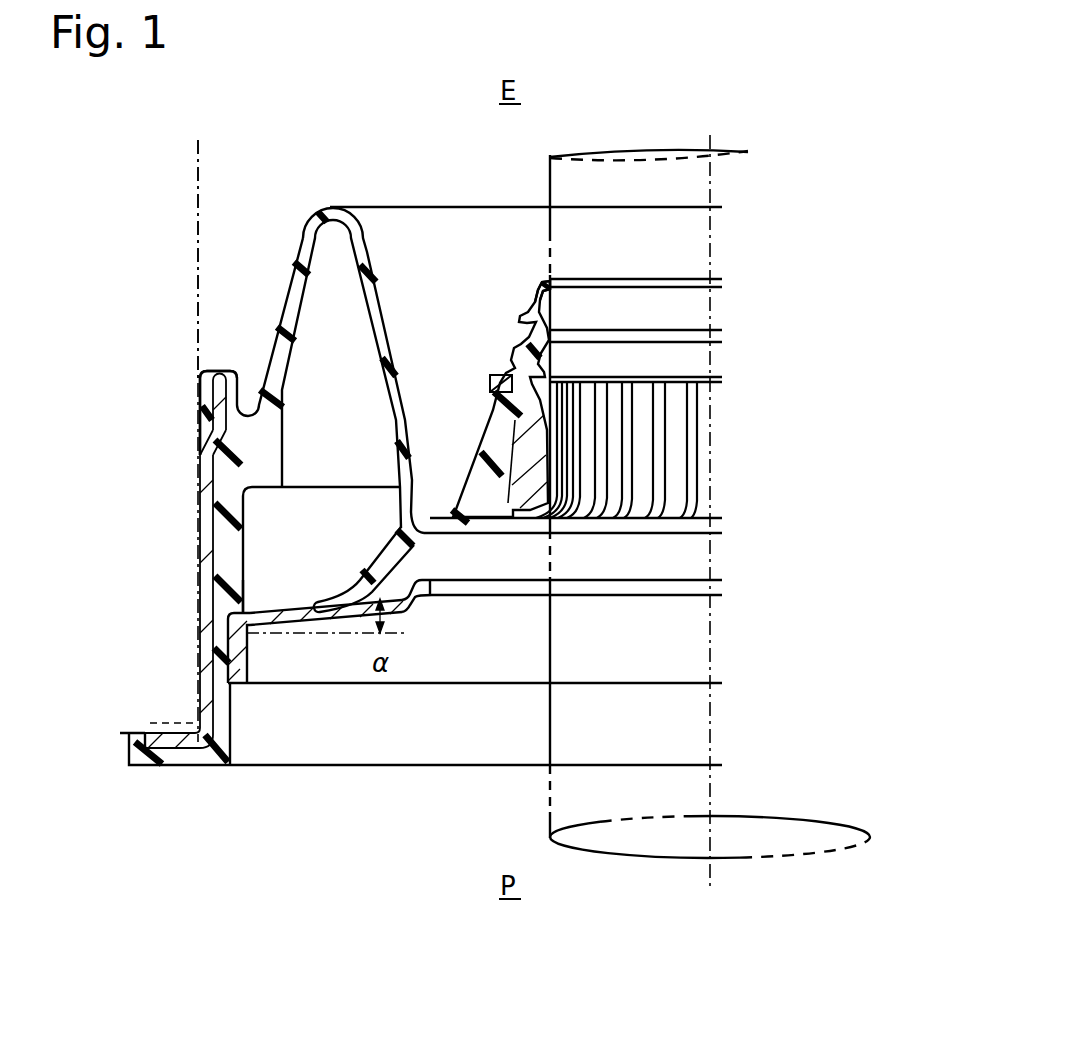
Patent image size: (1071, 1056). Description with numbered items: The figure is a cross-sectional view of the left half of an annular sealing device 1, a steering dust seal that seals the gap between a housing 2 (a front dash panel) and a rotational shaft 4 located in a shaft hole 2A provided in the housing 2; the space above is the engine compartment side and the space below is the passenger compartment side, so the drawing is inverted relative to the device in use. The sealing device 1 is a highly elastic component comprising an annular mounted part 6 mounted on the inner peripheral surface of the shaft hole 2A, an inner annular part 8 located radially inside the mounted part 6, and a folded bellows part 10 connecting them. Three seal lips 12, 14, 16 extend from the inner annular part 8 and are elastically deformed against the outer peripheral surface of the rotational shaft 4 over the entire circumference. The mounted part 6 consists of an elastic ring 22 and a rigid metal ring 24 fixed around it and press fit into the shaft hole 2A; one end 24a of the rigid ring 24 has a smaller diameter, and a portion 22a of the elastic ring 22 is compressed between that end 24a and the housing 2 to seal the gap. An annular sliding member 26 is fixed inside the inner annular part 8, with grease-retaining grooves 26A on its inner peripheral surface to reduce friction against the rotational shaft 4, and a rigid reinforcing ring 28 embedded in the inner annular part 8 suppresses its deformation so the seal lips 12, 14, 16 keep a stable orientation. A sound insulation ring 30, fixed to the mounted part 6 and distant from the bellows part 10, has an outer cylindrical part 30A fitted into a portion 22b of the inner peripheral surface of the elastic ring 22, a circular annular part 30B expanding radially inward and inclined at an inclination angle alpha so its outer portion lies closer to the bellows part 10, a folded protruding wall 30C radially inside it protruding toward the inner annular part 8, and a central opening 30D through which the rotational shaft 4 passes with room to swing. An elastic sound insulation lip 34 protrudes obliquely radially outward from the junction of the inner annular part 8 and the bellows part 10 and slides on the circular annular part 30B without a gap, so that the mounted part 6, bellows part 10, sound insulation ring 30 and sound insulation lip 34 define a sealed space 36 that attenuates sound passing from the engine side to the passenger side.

The sealing device 1 is at (445, 196).
The housing 2 is at (186, 188).
The shaft hole 2A is at (200, 247).
The rotational shaft 4 is at (547, 183).
The mounted part 6 is at (200, 465).
The inner annular part 8 is at (493, 408).
The bellows part 10 is at (287, 272).
The seal lip 12 is at (541, 286).
The seal lip 14 is at (552, 330).
The seal lip 16 is at (552, 343).
The elastic ring 22 is at (270, 460).
The portion of elastic ring 22a is at (200, 367).
The portion of inner peripheral surface of elastic ring 22b is at (245, 613).
The rigid ring 24 is at (200, 598).
The end of rigid ring 24a is at (213, 398).
The sliding member 26 is at (518, 523).
The grooves 26A is at (577, 519).
The reinforcing ring 28 is at (497, 375).
The sound insulation ring 30 is at (243, 684).
The outer cylindrical part 30A is at (243, 650).
The circular annular part 30B is at (335, 618).
The protruding wall 30C is at (413, 604).
The opening 30D is at (432, 592).
The sound insulation lip 34 is at (377, 557).
The sealed space 36 is at (337, 248).